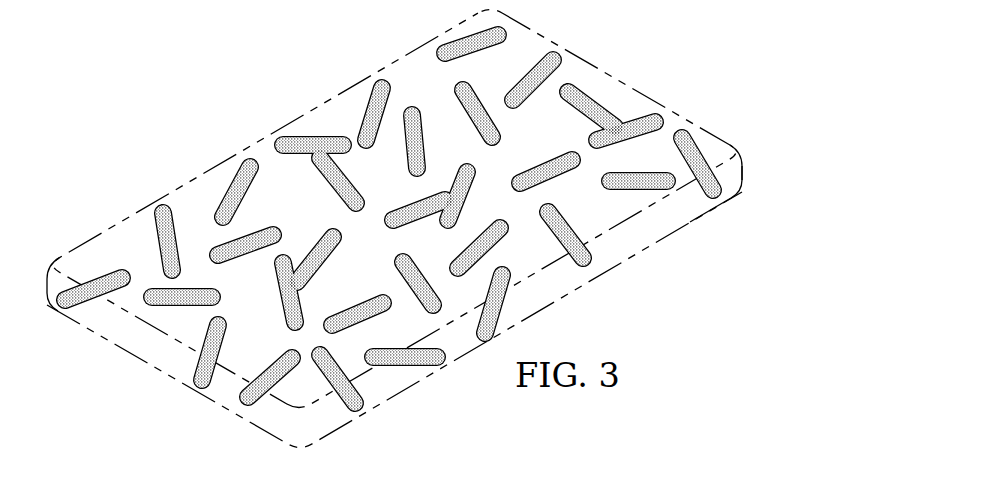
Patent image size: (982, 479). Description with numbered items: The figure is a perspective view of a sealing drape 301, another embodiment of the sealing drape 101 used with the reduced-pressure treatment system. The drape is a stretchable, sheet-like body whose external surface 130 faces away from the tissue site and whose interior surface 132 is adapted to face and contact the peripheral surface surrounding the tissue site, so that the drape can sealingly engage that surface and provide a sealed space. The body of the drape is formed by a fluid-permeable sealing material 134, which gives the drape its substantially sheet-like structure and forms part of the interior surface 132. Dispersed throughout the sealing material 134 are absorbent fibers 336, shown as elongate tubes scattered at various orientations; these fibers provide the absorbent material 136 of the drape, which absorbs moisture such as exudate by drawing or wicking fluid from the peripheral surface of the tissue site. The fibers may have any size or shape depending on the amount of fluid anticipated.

The sealing drape 101 is at (382, 229).
The sealing drape 301 is at (228, 78).
The external surface 130 is at (597, 77).
The interior surface 132 is at (407, 389).
The sealing material 134 is at (650, 235).
The absorbent material 136 is at (368, 219).
The absorbent fibers 336 is at (157, 230).